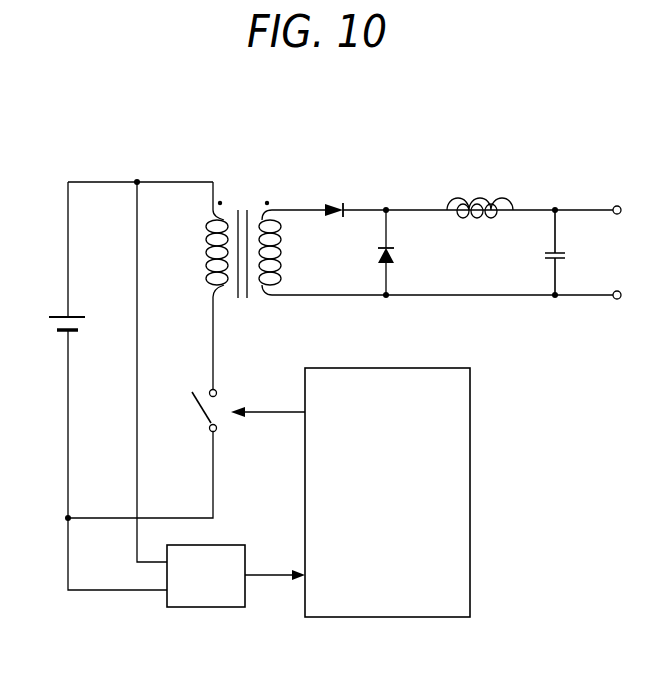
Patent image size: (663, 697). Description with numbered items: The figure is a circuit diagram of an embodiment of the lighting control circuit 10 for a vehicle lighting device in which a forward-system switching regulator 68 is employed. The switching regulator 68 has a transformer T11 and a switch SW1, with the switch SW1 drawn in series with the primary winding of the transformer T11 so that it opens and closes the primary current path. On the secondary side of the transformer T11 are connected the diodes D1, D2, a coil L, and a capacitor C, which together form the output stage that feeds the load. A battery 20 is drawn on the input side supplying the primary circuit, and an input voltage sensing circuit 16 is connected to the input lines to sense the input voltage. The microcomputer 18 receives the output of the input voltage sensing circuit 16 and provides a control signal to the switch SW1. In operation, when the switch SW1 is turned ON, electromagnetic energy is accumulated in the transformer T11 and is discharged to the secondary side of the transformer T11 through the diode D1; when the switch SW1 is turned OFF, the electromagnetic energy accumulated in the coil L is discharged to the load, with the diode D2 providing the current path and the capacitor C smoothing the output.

The lighting control circuit 10 is at (92, 128).
The switching regulator 68 is at (195, 155).
The battery 20 is at (63, 317).
The input voltage sensing circuit 16 is at (183, 607).
The microcomputer 18 is at (470, 450).
The transformer T11 is at (243, 283).
The diode D1 is at (333, 195).
The diode D2 is at (403, 252).
The coil L is at (480, 195).
The capacitor C is at (564, 252).
The switch SW1 is at (185, 421).